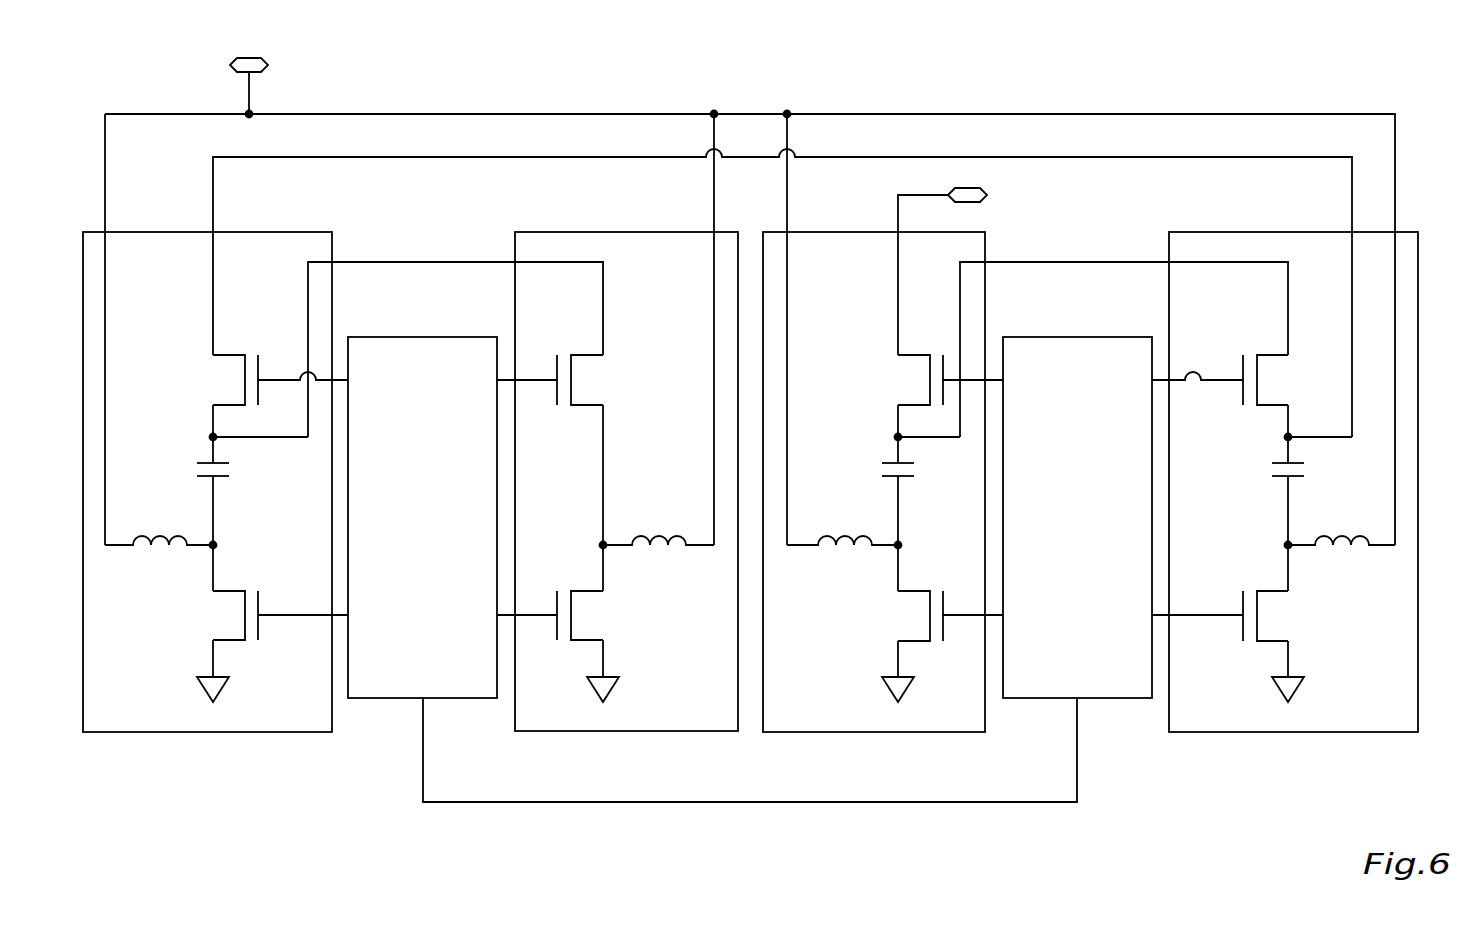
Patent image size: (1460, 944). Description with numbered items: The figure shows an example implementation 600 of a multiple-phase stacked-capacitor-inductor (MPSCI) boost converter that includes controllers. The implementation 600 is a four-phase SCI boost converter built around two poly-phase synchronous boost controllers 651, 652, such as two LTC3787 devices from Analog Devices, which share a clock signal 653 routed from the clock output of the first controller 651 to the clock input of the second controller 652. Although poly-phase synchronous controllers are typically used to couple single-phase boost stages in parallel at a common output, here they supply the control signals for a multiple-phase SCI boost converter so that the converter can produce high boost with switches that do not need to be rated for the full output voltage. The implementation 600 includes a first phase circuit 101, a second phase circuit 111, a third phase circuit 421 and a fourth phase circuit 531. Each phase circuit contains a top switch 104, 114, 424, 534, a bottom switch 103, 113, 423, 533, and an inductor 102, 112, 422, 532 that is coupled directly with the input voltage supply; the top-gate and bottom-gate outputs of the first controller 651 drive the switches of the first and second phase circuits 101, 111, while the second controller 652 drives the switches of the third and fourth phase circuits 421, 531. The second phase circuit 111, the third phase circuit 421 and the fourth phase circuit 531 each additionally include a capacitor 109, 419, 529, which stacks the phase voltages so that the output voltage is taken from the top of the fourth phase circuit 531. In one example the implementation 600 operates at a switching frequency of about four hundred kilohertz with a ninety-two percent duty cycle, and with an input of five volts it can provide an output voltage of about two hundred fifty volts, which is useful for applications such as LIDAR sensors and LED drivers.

The implementation 600 is at (178, 56).
The second phase circuit 111 is at (205, 733).
The top switch 114 is at (240, 380).
The capacitor 109 is at (229, 470).
The inductor 112 is at (160, 552).
The bottom switch 113 is at (240, 615).
The poly-phase synchronous boost controller 651 is at (420, 337).
The first phase circuit 101 is at (646, 732).
The top switch 104 is at (574, 380).
The inductor 102 is at (658, 552).
The bottom switch 103 is at (574, 615).
The fourth phase circuit 531 is at (853, 733).
The top switch 534 is at (928, 380).
The capacitor 529 is at (914, 470).
The inductor 532 is at (844, 552).
The bottom switch 533 is at (928, 615).
The poly-phase synchronous boost controller 652 is at (1075, 337).
The third phase circuit 421 is at (1295, 733).
The top switch 424 is at (1259, 380).
The capacitor 419 is at (1306, 470).
The inductor 422 is at (1341, 552).
The bottom switch 423 is at (1259, 615).
The clock signal 653 is at (728, 803).